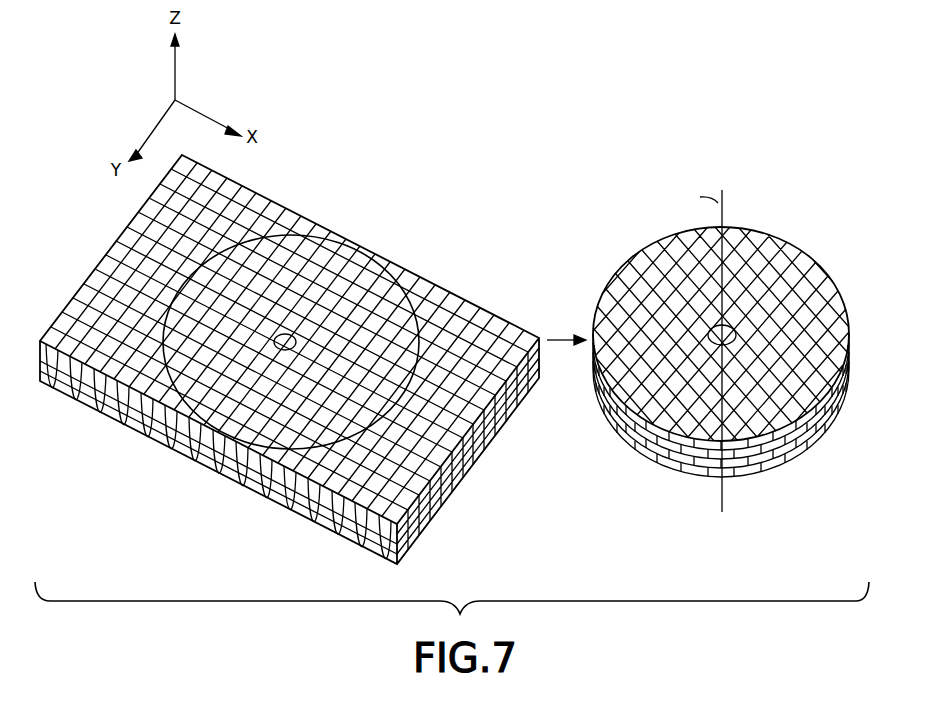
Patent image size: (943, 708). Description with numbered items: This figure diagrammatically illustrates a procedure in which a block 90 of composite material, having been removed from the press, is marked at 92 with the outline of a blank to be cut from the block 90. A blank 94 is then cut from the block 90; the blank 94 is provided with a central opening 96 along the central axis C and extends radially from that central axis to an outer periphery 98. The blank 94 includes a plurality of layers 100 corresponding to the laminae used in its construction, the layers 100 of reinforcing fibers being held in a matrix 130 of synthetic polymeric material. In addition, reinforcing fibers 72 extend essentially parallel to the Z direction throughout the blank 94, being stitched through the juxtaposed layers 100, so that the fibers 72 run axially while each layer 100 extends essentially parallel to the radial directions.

The block 90 is at (289, 359).
The outline of a blank 92 is at (392, 274).
The reinforcing fibers 72 is at (143, 427).
The matrix 130 is at (322, 515).
The blank 94 is at (753, 230).
The central opening 96 is at (736, 331).
The outer periphery 98 is at (739, 349).
The layers 100 is at (832, 444).